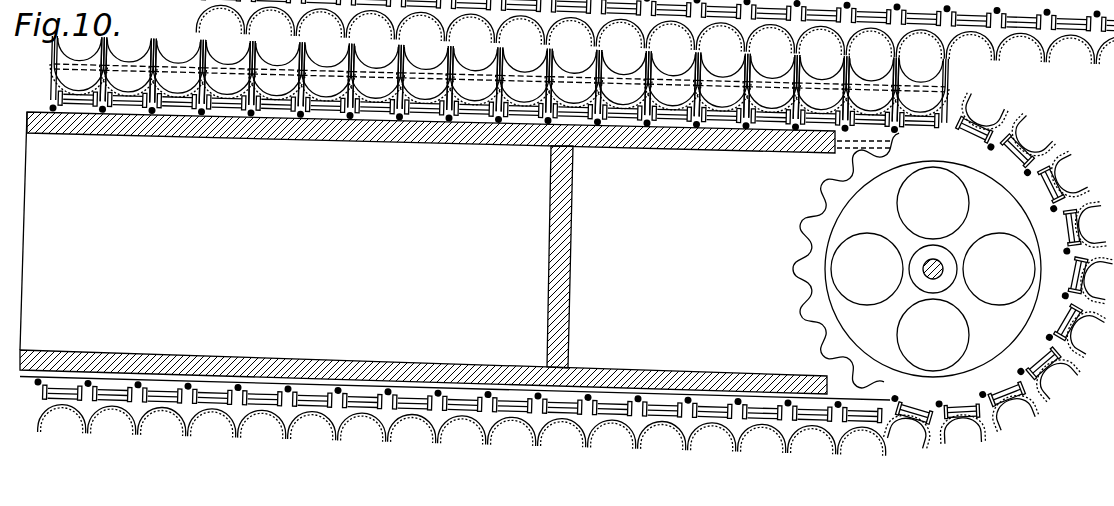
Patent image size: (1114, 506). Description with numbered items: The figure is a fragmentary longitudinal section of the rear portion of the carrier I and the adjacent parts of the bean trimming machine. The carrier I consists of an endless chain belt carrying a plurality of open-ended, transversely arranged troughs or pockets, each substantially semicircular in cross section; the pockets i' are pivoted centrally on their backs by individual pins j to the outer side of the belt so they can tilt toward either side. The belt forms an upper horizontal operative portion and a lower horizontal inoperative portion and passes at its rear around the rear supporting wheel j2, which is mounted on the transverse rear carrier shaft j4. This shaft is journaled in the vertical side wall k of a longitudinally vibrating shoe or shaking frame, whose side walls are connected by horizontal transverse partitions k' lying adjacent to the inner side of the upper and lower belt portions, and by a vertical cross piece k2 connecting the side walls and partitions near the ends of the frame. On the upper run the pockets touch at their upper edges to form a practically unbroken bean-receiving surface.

The side wall k is at (427, 253).
The horizontal transverse partition k' is at (427, 253).
The vertical cross piece k2 is at (552, 263).
The pin j is at (610, 407).
The rear supporting wheel j2 is at (887, 260).
The rear carrier shaft j4 is at (943, 272).
The buckets i' is at (576, 230).
The carrier I is at (567, 228).